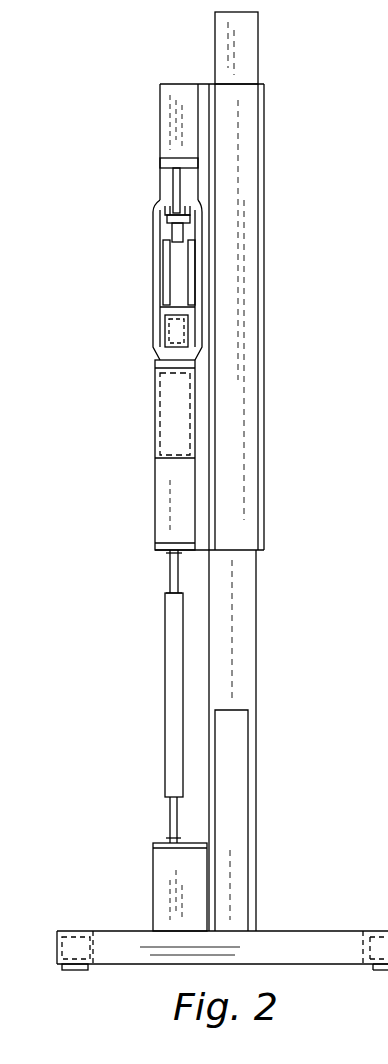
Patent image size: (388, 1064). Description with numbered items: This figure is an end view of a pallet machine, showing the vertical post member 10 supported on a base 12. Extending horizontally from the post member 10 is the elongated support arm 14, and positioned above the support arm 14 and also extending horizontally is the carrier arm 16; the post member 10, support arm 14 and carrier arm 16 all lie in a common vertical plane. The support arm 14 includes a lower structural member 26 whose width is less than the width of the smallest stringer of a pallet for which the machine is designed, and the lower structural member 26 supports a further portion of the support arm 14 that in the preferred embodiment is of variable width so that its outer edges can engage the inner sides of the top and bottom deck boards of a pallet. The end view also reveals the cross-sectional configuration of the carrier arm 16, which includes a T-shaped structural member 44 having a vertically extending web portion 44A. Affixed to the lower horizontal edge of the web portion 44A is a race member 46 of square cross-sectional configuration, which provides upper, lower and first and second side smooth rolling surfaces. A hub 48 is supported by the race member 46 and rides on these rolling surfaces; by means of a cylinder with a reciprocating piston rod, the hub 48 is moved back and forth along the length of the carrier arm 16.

The post member 10 is at (244, 617).
The base 12 is at (305, 947).
The support arm 14 is at (147, 411).
The carrier arm 16 is at (135, 207).
The lower structural member 26 is at (158, 405).
The T-shaped structural member 44 is at (172, 162).
The web portion 44A is at (174, 200).
The race member 46 is at (190, 207).
The hub 48 is at (175, 262).